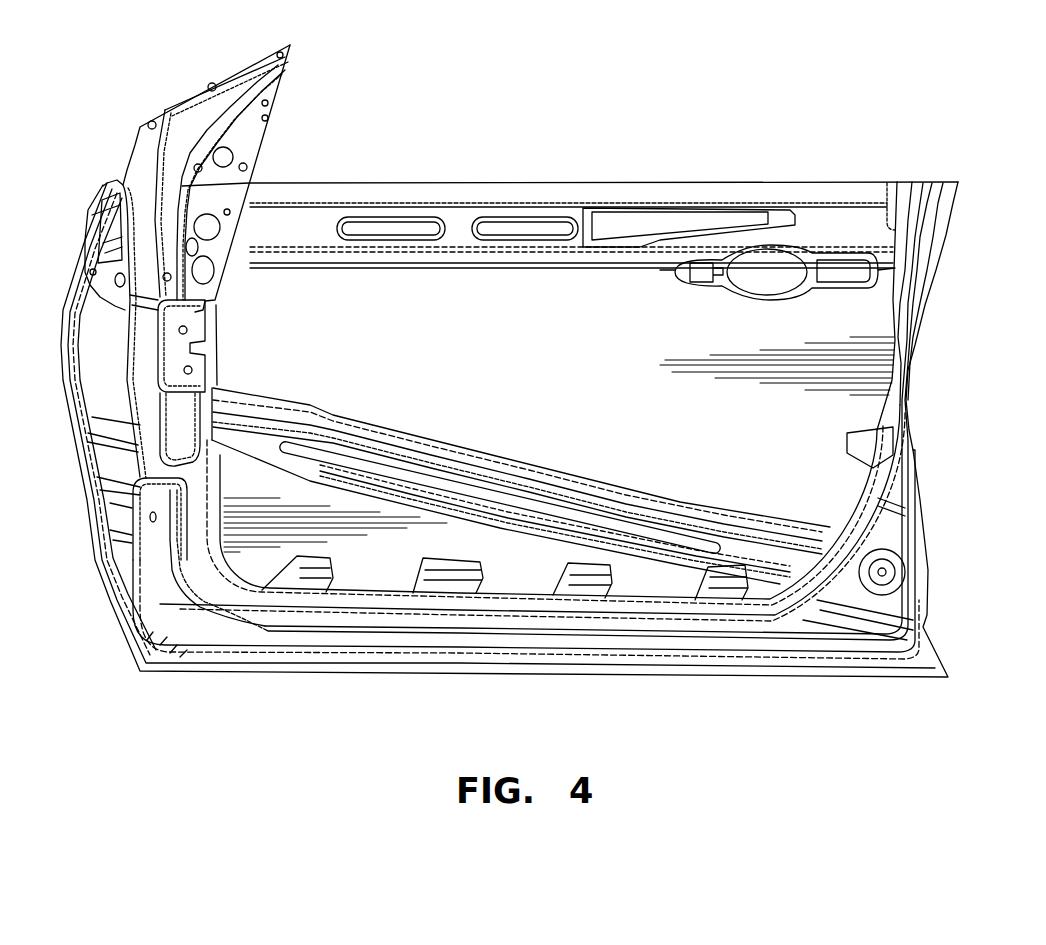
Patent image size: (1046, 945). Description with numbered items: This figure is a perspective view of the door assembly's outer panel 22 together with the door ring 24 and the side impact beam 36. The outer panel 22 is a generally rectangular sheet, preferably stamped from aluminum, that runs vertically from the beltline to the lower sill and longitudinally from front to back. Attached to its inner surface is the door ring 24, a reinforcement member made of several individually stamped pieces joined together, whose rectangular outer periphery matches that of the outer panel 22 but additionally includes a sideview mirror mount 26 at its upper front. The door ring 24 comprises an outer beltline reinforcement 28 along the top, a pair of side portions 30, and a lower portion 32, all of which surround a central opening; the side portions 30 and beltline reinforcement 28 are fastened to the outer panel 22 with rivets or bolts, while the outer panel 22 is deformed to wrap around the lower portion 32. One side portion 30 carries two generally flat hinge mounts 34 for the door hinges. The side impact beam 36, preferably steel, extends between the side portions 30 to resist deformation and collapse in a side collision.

The outer panel 22 is at (540, 305).
The door ring 24 is at (200, 83).
The sideview mirror mount 26 is at (250, 127).
The outer beltline reinforcement 28 is at (615, 193).
The side portions 30 is at (157, 398).
The lower portion 32 is at (648, 630).
The hinge mounts 34 is at (120, 305).
The side impact beam 36 is at (410, 473).